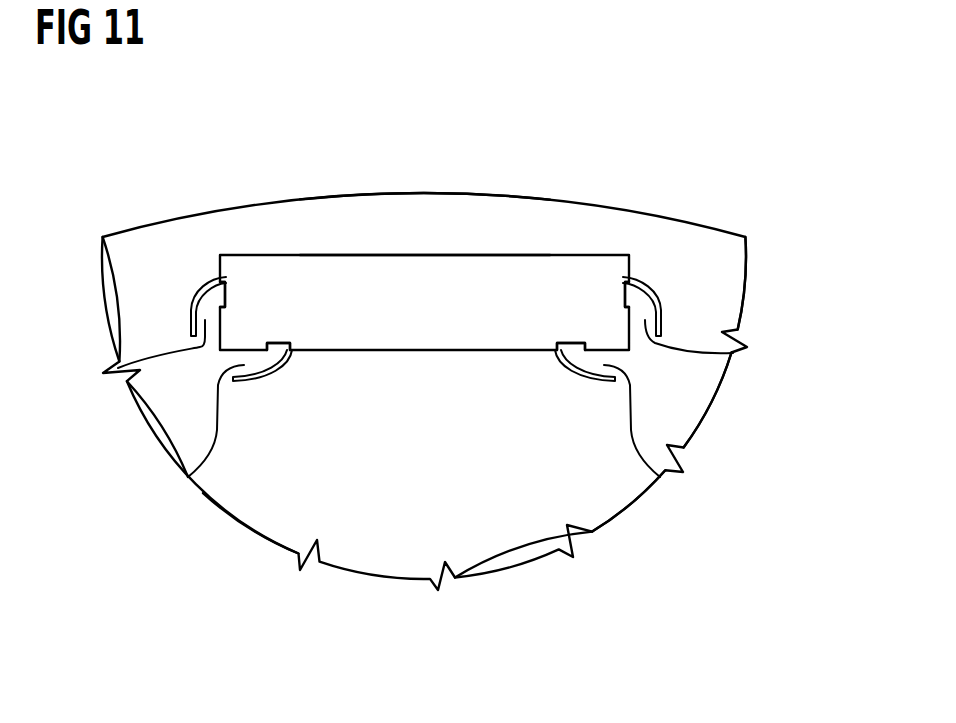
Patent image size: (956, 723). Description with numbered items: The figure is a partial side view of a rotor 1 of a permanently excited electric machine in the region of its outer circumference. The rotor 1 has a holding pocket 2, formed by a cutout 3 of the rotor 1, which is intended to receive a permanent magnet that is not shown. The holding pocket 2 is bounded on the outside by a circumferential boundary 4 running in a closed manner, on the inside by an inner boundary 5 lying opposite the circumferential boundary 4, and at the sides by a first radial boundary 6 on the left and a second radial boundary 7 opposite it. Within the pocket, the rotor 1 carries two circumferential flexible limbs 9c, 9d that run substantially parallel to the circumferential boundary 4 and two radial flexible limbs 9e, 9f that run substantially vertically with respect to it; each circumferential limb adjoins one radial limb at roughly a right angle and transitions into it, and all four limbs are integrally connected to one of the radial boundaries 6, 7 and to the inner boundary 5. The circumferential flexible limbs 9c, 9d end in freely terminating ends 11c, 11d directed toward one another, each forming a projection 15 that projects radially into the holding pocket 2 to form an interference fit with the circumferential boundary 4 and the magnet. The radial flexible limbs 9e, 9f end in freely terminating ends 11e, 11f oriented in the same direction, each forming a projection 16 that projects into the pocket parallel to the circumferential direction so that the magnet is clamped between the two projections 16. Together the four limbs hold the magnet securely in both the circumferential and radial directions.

The rotor 1 is at (774, 463).
The holding pocket 2 is at (472, 270).
The cutout 3 is at (399, 260).
The circumferential boundary 4 is at (387, 220).
The inner boundary 5 is at (503, 513).
The first radial boundary 6 is at (150, 279).
The second radial boundary 7 is at (700, 278).
The circumferential flexible limb 9c is at (183, 487).
The circumferential flexible limb 9d is at (660, 477).
The radial flexible limb 9e is at (104, 373).
The radial flexible limb 9f is at (731, 357).
The freely terminating end 11c is at (284, 337).
The freely terminating end 11d is at (566, 338).
The freely terminating end 11e is at (236, 291).
The freely terminating end 11f is at (610, 288).
The projection 15 is at (284, 350).
The projection 16 is at (226, 295).